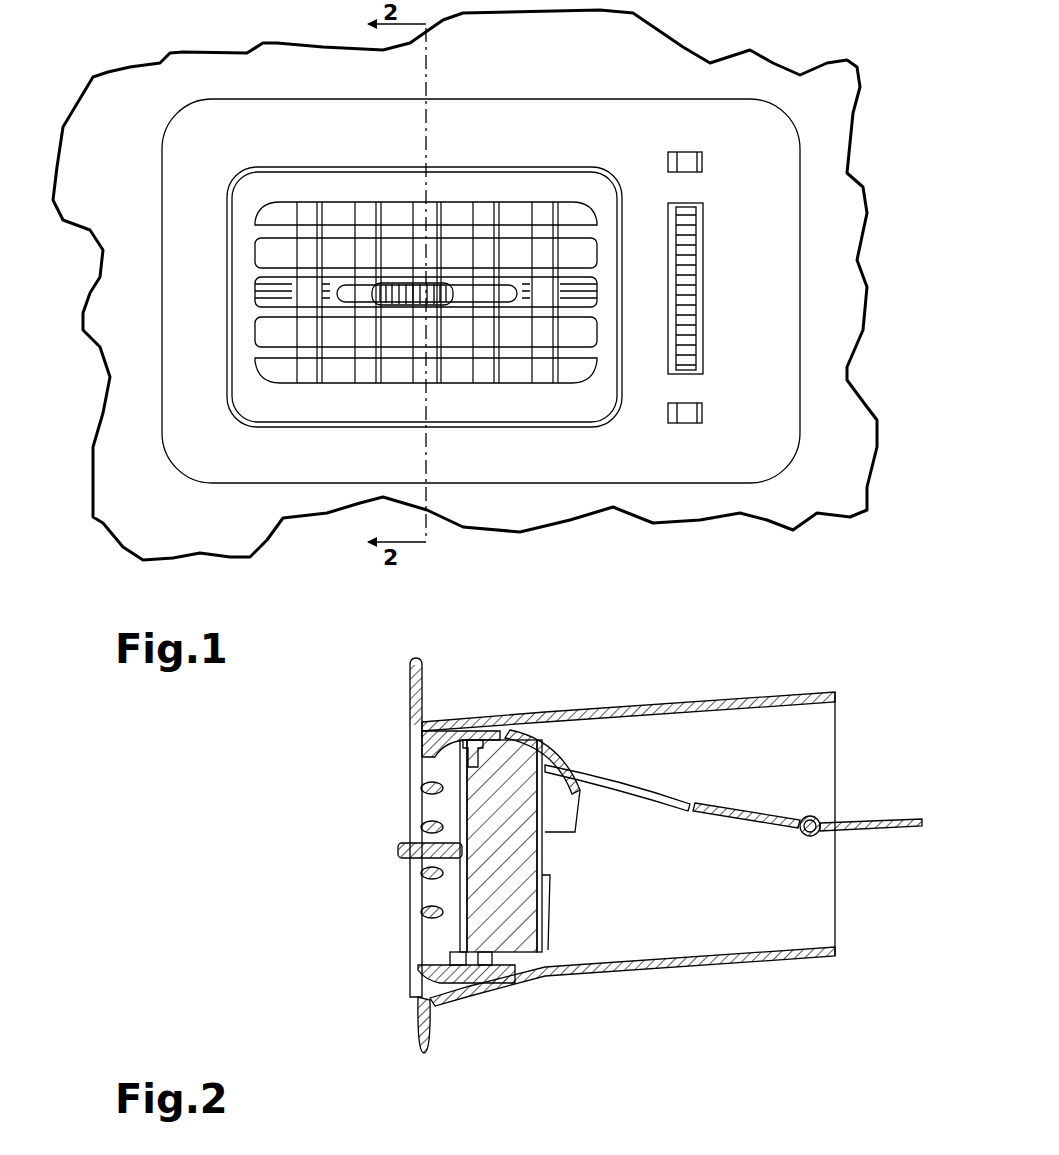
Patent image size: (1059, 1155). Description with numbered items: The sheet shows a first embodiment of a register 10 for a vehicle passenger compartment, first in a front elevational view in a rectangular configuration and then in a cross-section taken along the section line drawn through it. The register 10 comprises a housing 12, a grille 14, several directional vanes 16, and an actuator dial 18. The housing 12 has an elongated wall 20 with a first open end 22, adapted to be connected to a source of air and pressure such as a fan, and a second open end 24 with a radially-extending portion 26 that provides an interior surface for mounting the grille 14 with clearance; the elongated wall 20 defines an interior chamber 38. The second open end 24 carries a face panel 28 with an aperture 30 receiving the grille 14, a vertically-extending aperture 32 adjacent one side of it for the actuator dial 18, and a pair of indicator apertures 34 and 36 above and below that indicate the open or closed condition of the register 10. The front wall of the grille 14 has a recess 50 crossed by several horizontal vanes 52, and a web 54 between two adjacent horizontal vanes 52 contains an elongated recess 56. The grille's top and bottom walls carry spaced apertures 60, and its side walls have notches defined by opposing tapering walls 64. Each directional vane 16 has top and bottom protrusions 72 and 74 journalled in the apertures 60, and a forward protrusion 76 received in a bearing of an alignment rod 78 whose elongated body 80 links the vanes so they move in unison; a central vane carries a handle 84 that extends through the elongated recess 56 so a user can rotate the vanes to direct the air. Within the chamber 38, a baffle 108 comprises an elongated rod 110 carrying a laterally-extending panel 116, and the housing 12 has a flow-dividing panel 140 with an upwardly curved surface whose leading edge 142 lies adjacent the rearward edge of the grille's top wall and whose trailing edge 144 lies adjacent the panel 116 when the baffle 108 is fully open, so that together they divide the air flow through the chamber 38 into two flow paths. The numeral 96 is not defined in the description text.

In FIG. 1, the register 10 is at (124, 152).
In FIG. 2, the register 10 is at (300, 813).
In FIG. 1, the housing 12 is at (611, 99).
In FIG. 2, the housing 12 is at (430, 656).
In FIG. 1, the grille 14 is at (493, 169).
In FIG. 1, the directional vanes 16 is at (485, 375).
In FIG. 2, the directional vanes 16 is at (462, 923).
In FIG. 1, the actuator dial 18 is at (717, 288).
In FIG. 2, the elongated wall 20 is at (695, 703).
In FIG. 2, the first open end 22 is at (824, 692).
In FIG. 2, the second open end 24 is at (452, 725).
In FIG. 2, the radially-extending portion 26 is at (522, 735).
In FIG. 1, the face panel 28 is at (275, 120).
In FIG. 1, the aperture 30 is at (560, 168).
In FIG. 1, the vertically-extending aperture 32 is at (705, 338).
In FIG. 1, the indicator aperture 34 is at (703, 162).
In FIG. 1, the indicator aperture 36 is at (703, 413).
In FIG. 2, the interior chamber 38 is at (756, 752).
In FIG. 1, the recess 50 is at (468, 333).
In FIG. 1, the horizontal vanes 52 is at (278, 235).
In FIG. 2, the horizontal vanes 52 is at (418, 786).
In FIG. 1, the web 54 is at (520, 300).
In FIG. 1, the elongated recess 56 is at (358, 300).
In FIG. 2, the spaced apertures 60 is at (508, 740).
In FIG. 2, the tapering walls 64 is at (560, 832).
In FIG. 2, the top protrusion 72 is at (500, 735).
In FIG. 2, the bottom protrusion 74 is at (500, 976).
In FIG. 2, the forward protrusion 76 is at (470, 966).
In FIG. 2, the alignment rod 78 is at (440, 975).
In FIG. 2, the elongated body 80 is at (455, 962).
In FIG. 2, the handle 84 is at (398, 850).
In FIG. 1, the ribs 96 is at (688, 250).
In FIG. 2, the baffle 108 is at (818, 842).
In FIG. 2, the elongated rod 110 is at (800, 834).
In FIG. 2, the panel 116 is at (778, 815).
In FIG. 2, the flow-dividing panel 140 is at (626, 772).
In FIG. 2, the leading edge 142 is at (610, 760).
In FIG. 2, the trailing edge 144 is at (685, 800).